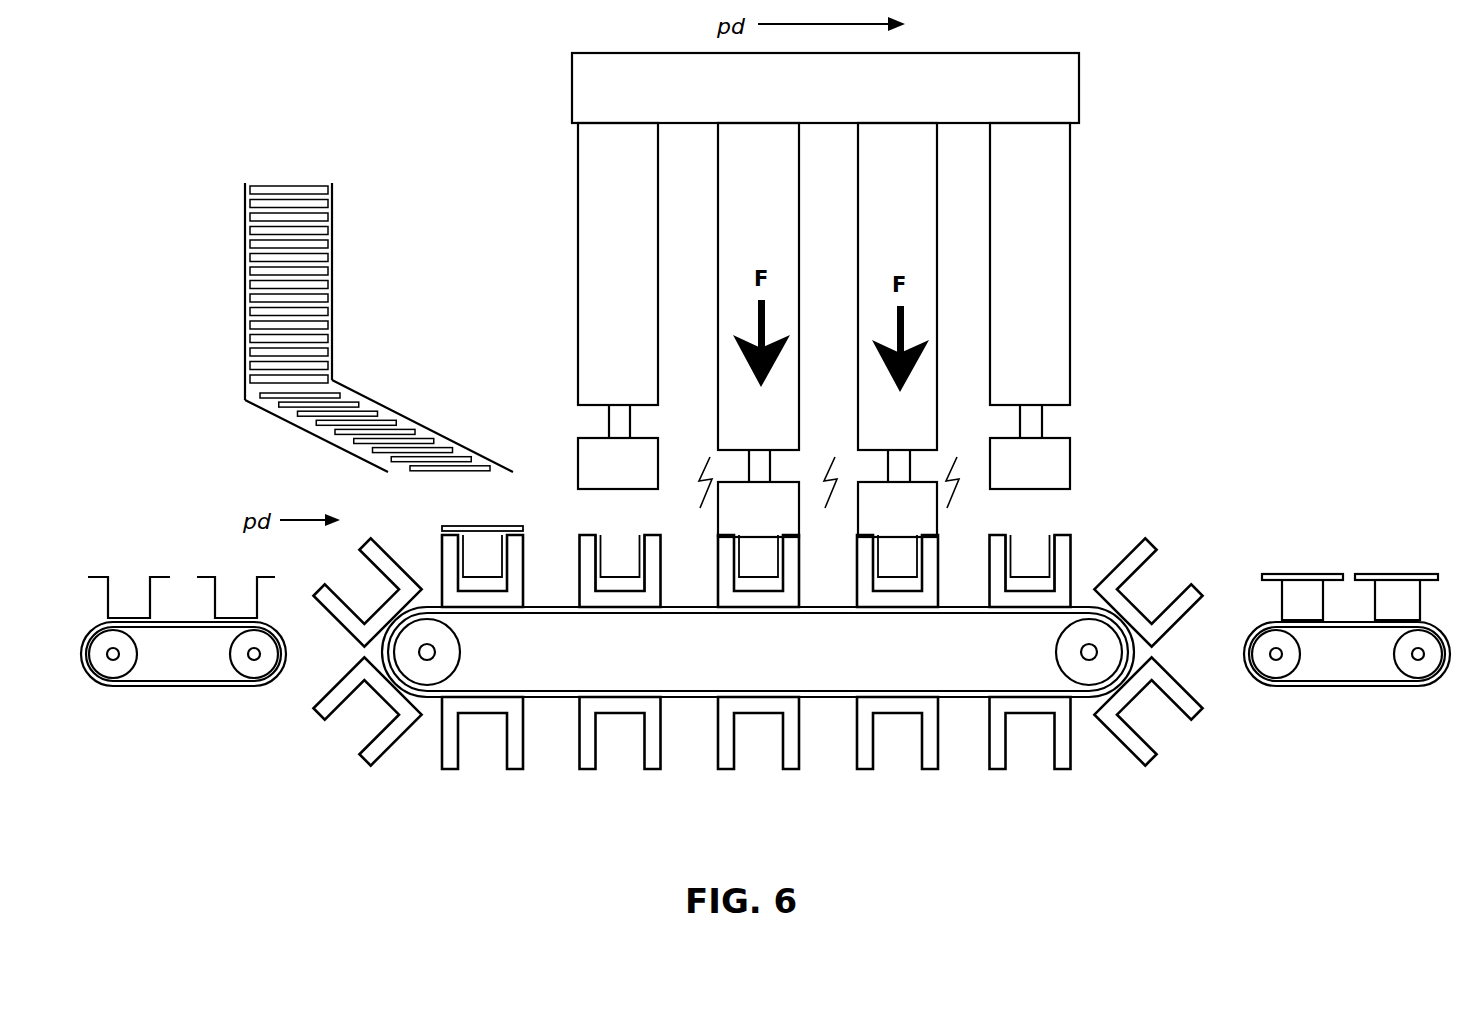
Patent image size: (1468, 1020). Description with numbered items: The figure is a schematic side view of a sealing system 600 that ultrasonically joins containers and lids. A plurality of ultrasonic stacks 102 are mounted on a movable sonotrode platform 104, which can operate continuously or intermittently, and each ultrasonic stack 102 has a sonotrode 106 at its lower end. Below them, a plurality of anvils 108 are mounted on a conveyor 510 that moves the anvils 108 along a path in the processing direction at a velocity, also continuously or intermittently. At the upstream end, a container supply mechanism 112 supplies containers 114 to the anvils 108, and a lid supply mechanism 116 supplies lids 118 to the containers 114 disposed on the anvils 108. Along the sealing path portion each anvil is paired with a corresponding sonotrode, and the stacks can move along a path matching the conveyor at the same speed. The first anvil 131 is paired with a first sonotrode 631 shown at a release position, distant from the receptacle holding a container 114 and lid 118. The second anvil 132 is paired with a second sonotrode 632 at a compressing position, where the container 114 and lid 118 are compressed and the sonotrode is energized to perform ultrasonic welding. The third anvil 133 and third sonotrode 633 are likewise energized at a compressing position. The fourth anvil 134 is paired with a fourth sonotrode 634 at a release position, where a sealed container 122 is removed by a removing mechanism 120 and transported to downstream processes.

The sealing system 600 is at (458, 78).
The ultrasonic stack 102 is at (1031, 229).
The movable sonotrode platform 104 is at (1080, 85).
The sonotrode 106 is at (1058, 466).
The anvil 108 is at (1063, 558).
The container supply mechanism 112 is at (197, 693).
The container 114 is at (153, 570).
The lid supply mechanism 116 is at (240, 257).
The lid 118 is at (423, 430).
The removing mechanism 120 is at (1344, 693).
The sealed container 122 is at (1312, 595).
The first anvil 131 is at (632, 593).
The second anvil 132 is at (792, 595).
The third anvil 133 is at (922, 595).
The fourth anvil 134 is at (1057, 597).
The conveyor 510 is at (552, 700).
The first sonotrode 631 is at (618, 463).
The second sonotrode 632 is at (758, 509).
The third sonotrode 633 is at (897, 509).
The fourth sonotrode 634 is at (1030, 463).